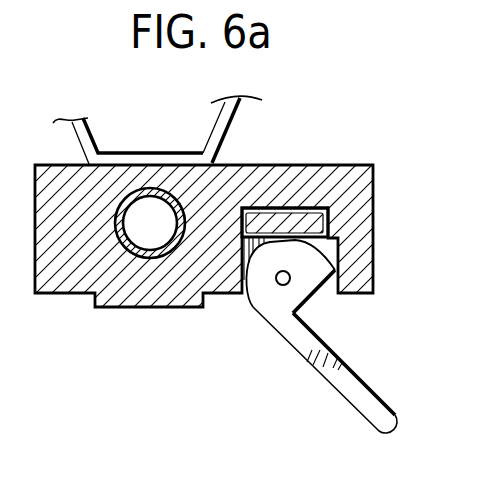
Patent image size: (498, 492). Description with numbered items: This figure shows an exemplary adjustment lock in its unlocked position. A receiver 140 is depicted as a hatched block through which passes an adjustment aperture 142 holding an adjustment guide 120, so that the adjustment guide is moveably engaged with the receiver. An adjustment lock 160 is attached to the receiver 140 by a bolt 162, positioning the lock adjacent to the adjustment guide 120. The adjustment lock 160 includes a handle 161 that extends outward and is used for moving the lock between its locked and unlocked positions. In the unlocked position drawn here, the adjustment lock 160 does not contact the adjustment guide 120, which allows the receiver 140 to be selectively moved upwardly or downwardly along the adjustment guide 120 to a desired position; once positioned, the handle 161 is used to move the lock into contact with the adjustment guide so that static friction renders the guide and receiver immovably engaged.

The adjustment guide 120 is at (273, 212).
The adjustment aperture 142 is at (312, 206).
The receiver 140 is at (366, 214).
The adjustment lock 160 is at (304, 336).
The handle 161 is at (341, 372).
The bolt 162 is at (277, 282).